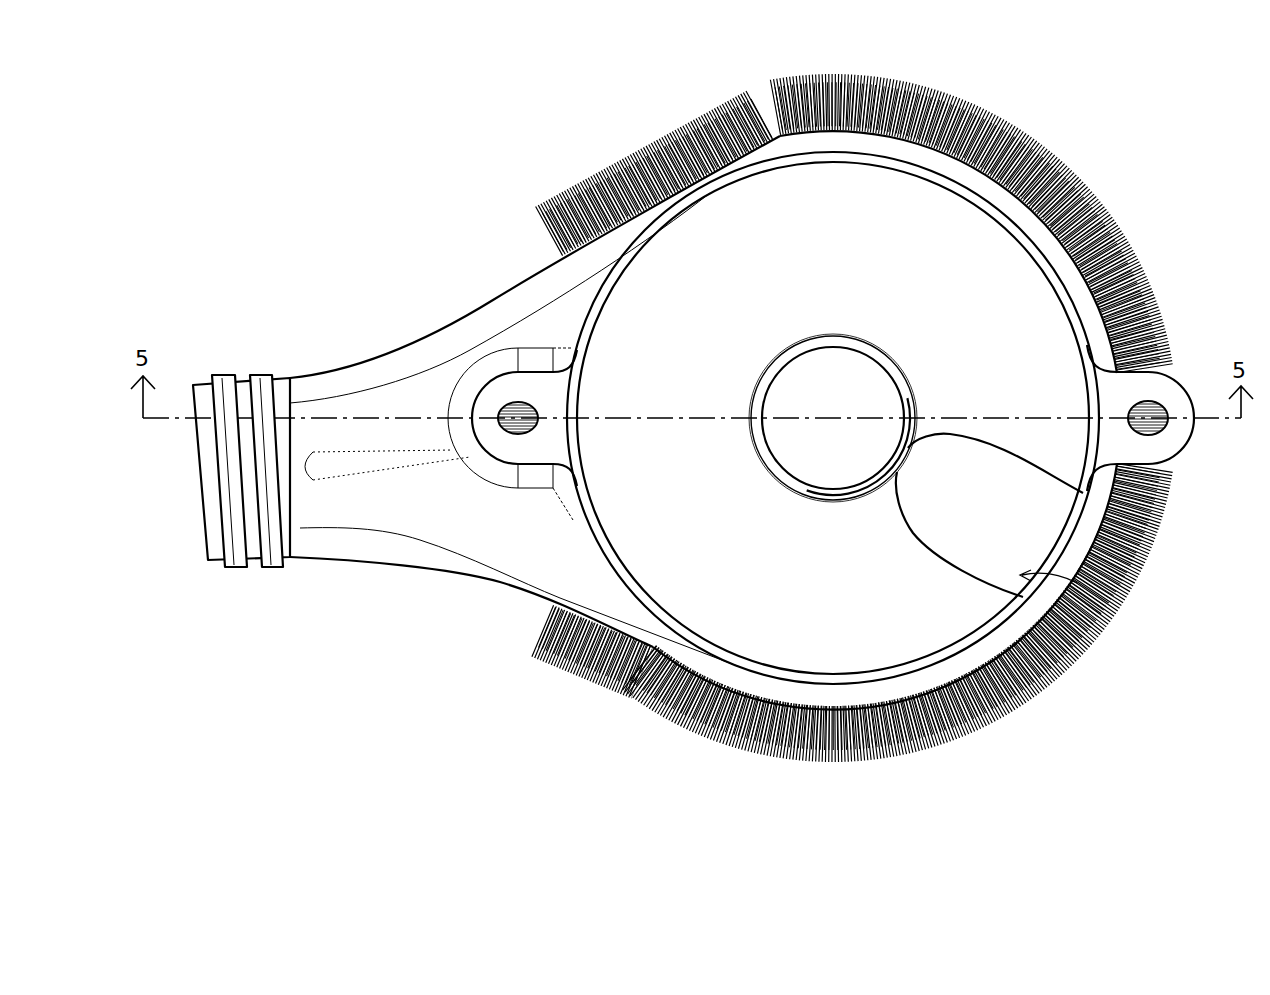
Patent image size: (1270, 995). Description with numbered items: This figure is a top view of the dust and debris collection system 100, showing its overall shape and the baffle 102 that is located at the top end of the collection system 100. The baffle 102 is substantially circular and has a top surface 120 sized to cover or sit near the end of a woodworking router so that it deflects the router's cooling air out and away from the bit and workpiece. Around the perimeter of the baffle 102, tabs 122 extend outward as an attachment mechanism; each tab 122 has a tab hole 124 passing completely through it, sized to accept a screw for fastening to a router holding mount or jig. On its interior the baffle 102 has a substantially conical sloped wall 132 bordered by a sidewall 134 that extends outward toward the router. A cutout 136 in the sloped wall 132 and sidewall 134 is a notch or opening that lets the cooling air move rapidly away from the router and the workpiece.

The collection system 100 is at (575, 66).
The baffle 102 is at (958, 660).
The top surface 120 is at (830, 648).
The tab 122 is at (507, 392).
The tab hole 124 is at (511, 403).
The sloped wall 132 is at (975, 617).
The sidewall 134 is at (1118, 302).
The cutout 136 is at (1088, 592).